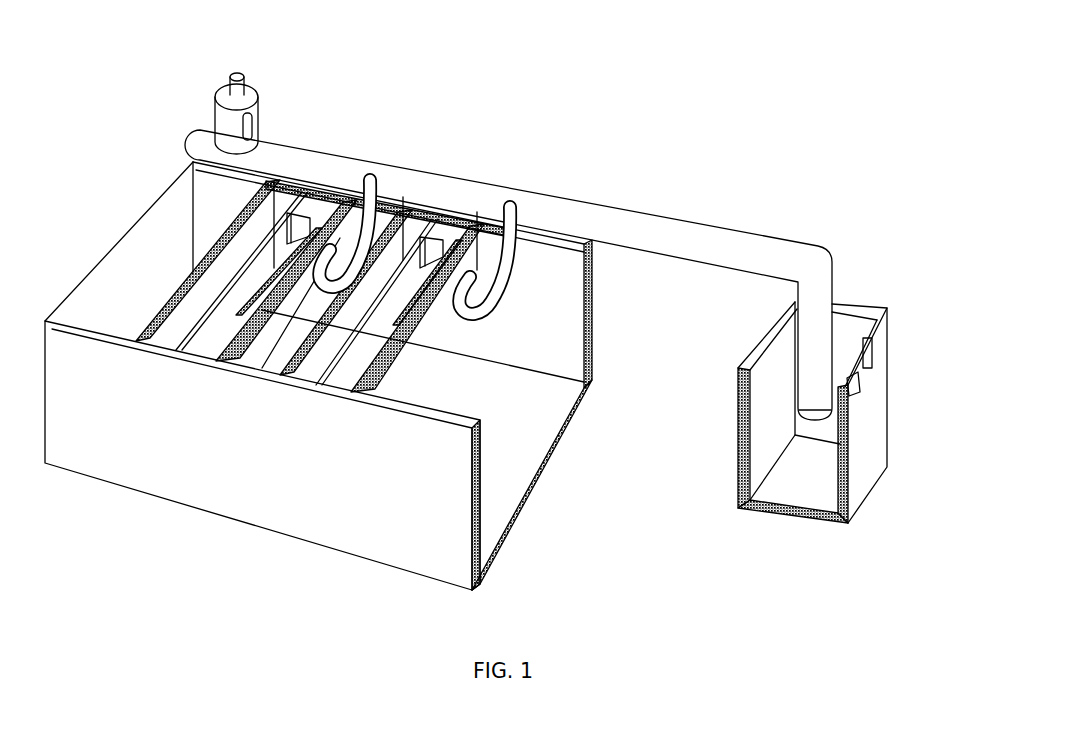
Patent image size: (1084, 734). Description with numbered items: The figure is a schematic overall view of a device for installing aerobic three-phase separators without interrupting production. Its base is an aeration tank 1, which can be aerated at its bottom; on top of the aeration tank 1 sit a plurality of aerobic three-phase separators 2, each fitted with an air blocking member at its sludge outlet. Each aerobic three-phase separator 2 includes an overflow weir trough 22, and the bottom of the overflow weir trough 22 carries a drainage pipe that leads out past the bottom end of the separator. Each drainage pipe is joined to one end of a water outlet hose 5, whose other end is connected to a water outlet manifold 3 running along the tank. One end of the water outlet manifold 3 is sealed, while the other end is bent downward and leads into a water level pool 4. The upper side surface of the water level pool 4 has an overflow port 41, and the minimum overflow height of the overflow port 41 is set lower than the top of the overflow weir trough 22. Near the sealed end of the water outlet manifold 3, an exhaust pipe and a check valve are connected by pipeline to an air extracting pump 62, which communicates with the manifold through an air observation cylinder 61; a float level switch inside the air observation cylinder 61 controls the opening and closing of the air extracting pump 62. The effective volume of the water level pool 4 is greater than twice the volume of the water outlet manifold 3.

The aeration tank 1 is at (360, 495).
The aerobic three-phase separator 2 is at (330, 375).
The overflow weir trough 22 is at (310, 218).
The water outlet manifold 3 is at (488, 187).
The water level pool 4 is at (773, 485).
The overflow port 41 is at (858, 392).
The water outlet hose 5 is at (497, 305).
The air observation cylinder 61 is at (258, 116).
The air extracting pump 62 is at (237, 72).